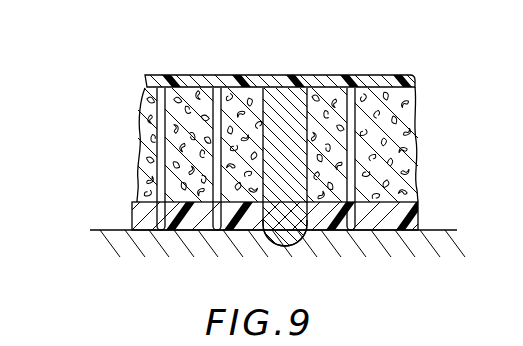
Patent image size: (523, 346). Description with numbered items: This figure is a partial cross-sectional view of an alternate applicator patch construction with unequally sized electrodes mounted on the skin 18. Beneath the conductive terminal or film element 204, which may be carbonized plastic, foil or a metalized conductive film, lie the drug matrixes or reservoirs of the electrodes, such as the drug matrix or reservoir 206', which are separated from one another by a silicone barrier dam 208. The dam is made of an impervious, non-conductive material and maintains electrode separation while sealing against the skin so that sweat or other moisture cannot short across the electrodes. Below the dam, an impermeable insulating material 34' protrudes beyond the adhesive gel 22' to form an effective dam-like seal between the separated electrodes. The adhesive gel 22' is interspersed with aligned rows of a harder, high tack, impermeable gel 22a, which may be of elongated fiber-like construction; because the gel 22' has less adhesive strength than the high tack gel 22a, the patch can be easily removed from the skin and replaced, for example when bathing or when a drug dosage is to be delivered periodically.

The conductive terminal or film element 204 is at (187, 84).
The silicone barrier dam 208 is at (280, 100).
The drug matrix or reservoir 206' is at (197, 145).
The skin 18 is at (100, 230).
The adhesive gel 22' is at (272, 247).
The high tack impermeable gel 22a is at (217, 232).
The impermeable insulating material 34' is at (314, 260).